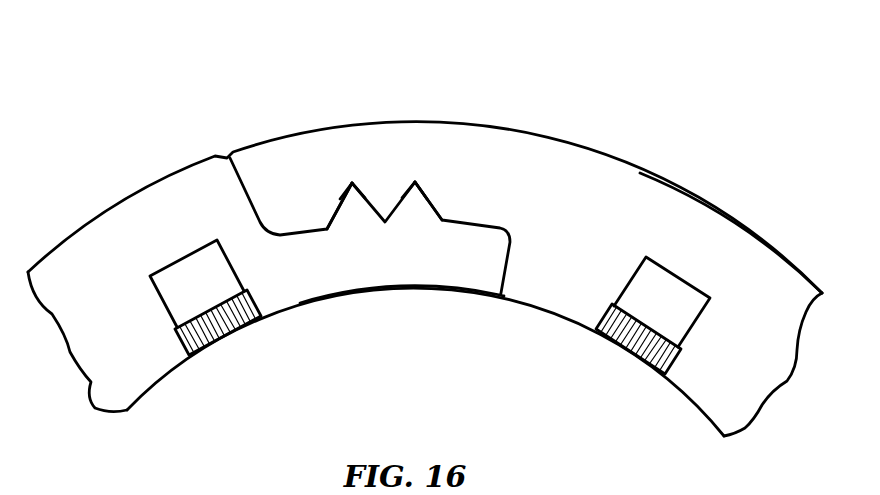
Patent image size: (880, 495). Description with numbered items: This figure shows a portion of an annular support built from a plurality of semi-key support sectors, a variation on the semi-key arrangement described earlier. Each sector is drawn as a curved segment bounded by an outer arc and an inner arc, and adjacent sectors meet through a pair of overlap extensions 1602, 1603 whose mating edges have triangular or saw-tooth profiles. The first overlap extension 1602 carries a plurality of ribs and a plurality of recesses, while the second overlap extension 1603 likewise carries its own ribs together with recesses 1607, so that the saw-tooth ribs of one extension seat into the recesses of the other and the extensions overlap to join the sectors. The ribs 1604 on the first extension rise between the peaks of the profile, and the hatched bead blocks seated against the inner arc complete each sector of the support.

The overlap extension 1602 is at (260, 168).
The overlap extension 1603 is at (360, 275).
The rib 1604 is at (383, 207).
The recess 1607 is at (387, 228).